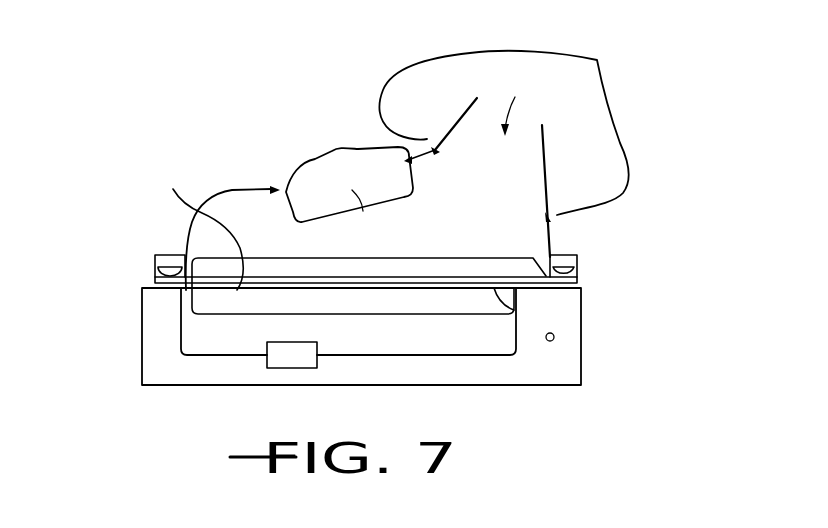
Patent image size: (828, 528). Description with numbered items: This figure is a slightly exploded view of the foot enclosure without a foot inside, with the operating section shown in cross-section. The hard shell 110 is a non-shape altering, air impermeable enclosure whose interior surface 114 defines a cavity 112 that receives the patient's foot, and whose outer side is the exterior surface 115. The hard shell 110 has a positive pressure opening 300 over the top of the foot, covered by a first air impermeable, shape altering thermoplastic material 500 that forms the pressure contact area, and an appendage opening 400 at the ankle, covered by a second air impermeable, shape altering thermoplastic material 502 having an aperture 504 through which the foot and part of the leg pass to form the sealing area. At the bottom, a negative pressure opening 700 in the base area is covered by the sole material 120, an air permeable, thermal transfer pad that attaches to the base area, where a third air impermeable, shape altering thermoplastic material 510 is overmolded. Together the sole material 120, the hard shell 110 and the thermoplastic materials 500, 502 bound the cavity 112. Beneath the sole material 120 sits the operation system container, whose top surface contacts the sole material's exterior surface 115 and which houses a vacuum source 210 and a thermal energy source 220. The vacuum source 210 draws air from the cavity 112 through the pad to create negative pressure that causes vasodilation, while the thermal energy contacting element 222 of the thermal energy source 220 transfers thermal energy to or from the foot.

The hard shell 110 is at (231, 189).
The cavity 112 is at (481, 230).
The interior surface 114 is at (188, 232).
The exterior surface 115 is at (180, 289).
The sole material 120 is at (517, 313).
The vacuum source 210 is at (311, 290).
The thermal energy source 220 is at (402, 314).
The thermal energy contacting element 222 is at (348, 321).
The positive pressure opening 300 is at (337, 148).
The appendage opening 400 is at (508, 125).
The first air impermeable, shape altering thermoplastic material 500 is at (347, 190).
The second air impermeable, shape altering thermoplastic material 502 is at (460, 119).
The aperture 504 is at (529, 106).
The third air impermeable, shape altering thermoplastic material 510 is at (155, 278).
The negative pressure opening 700 is at (485, 268).